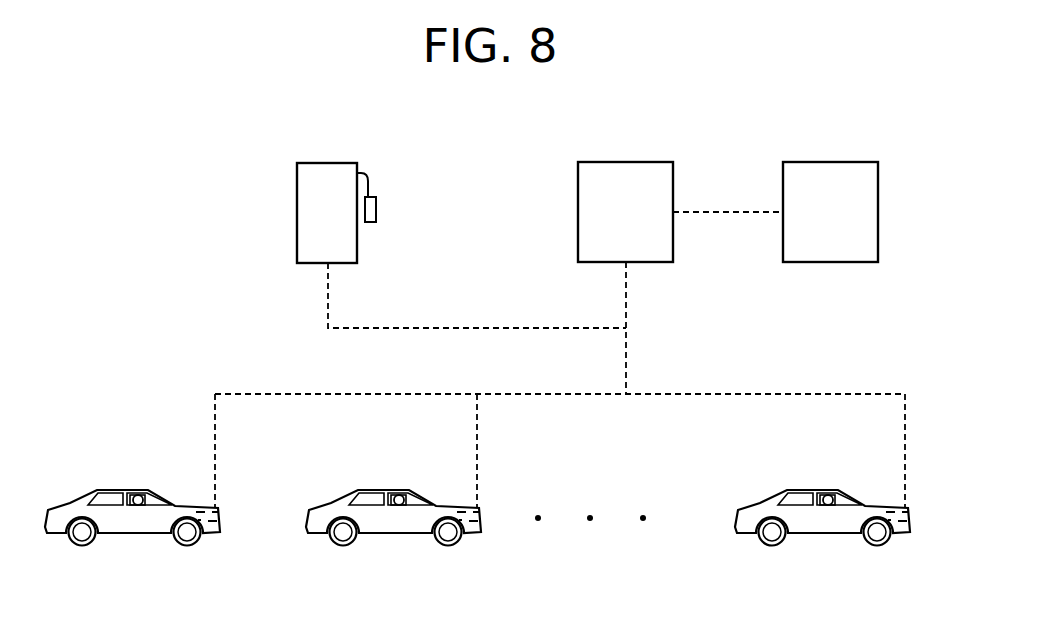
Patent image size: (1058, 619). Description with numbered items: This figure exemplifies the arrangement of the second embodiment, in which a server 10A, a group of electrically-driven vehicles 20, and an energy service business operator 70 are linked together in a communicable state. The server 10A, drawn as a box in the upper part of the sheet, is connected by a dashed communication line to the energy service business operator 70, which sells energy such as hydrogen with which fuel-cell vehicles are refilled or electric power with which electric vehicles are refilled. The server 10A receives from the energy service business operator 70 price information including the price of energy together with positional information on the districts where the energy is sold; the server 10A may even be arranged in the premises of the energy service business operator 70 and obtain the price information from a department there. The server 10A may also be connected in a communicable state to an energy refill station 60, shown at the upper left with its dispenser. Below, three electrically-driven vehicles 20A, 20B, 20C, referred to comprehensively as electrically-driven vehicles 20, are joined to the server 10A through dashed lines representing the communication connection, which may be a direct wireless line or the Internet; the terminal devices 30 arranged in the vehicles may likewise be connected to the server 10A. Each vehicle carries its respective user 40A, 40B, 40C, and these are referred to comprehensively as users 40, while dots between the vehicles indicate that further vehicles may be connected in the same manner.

The server 10A is at (652, 162).
The energy refill station 60 is at (321, 163).
The energy service business operator 70 is at (855, 162).
The terminal devices 30 is at (221, 511).
The users 40 is at (474, 454).
The user 40A is at (130, 490).
The user 40B is at (392, 490).
The user 40C is at (823, 490).
The electrically-driven vehicles 20 is at (535, 462).
The electrically-driven vehicle 20A is at (178, 512).
The electrically-driven vehicle 20B is at (439, 512).
The electrically-driven vehicle 20C is at (870, 512).